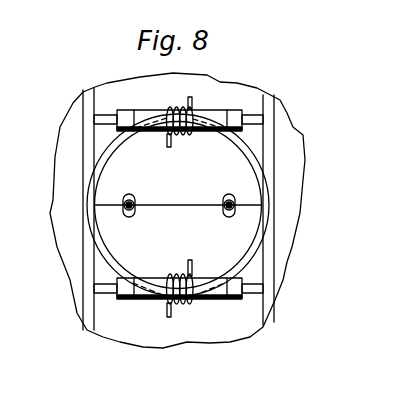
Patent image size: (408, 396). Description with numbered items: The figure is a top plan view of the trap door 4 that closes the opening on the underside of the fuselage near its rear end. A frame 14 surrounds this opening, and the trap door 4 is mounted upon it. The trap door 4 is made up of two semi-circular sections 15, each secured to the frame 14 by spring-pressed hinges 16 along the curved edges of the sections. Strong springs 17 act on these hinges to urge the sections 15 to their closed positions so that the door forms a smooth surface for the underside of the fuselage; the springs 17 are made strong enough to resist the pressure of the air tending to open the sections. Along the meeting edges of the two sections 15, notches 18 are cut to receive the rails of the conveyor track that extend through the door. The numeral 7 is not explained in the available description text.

The trap door 4 is at (258, 175).
The pivot bolt 7 is at (128, 198).
The frame 14 is at (257, 251).
The semi-circular sections 15 is at (178, 202).
The spring-pressed hinges 16 is at (153, 115).
The springs 17 is at (193, 108).
The notches 18 is at (131, 197).